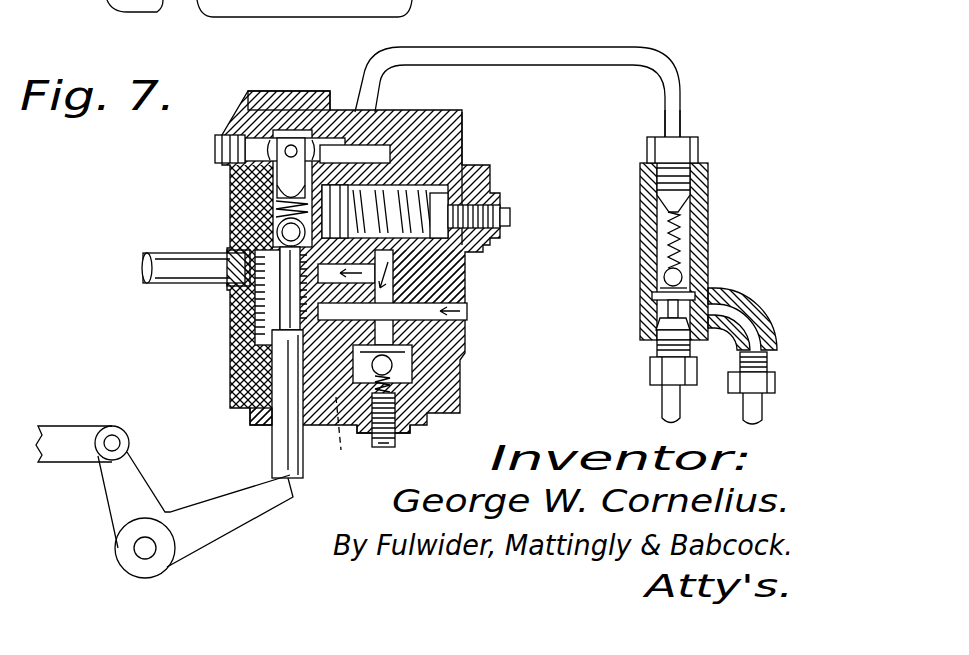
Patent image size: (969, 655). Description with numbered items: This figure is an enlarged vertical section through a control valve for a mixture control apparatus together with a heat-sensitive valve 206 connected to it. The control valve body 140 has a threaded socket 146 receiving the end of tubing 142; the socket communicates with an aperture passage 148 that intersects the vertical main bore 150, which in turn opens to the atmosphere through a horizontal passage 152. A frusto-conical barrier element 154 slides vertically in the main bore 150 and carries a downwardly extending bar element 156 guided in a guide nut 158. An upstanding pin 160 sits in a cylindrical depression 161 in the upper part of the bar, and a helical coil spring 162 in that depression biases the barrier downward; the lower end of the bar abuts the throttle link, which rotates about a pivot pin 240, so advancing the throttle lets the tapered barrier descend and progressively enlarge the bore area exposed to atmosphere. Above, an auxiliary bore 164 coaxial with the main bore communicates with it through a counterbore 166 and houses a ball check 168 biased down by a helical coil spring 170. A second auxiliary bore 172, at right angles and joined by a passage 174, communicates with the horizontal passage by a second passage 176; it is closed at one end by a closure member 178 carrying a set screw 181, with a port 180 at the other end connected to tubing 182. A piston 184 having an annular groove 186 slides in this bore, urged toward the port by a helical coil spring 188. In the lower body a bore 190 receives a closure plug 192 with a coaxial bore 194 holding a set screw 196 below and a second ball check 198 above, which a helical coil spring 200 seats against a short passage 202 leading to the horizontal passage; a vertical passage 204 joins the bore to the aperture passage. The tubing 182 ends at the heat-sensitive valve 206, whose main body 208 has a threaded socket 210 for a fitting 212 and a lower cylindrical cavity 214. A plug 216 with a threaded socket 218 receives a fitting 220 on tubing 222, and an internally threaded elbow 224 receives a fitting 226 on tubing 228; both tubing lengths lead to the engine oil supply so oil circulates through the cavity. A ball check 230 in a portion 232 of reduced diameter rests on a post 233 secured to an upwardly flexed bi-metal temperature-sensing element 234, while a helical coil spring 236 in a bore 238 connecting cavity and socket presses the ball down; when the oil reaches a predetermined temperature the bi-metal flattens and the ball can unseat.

The control valve body 140 is at (476, 118).
The tubing 142 is at (150, 263).
The threaded socket 146 is at (276, 233).
The aperture passage 148 is at (268, 302).
The main bore 150 is at (237, 388).
The horizontal passage 152 is at (470, 314).
The frusto-conical barrier element 154 is at (273, 335).
The bar element 156 is at (280, 455).
The guide nut 158 is at (250, 418).
The upstanding pin 160 is at (287, 345).
The cylindrical depression 161 is at (258, 312).
The helical coil spring / throttle link 162 is at (212, 532).
The auxiliary bore 164 is at (283, 188).
The counterbore 166 is at (240, 253).
The ball check 168 is at (273, 208).
The helical coil spring 170 is at (272, 180).
The second auxiliary bore 172 is at (392, 165).
The passage 174 is at (362, 160).
The second passage 176 is at (465, 293).
The closure member 178 is at (490, 172).
The port 180 is at (463, 128).
The set screw 181 is at (508, 222).
The tubing 182 is at (550, 56).
The piston 184 is at (450, 172).
The annular groove 186 is at (465, 270).
The helical coil spring 188 is at (508, 206).
The bore 190 is at (420, 370).
The closure plug 192 is at (418, 430).
The coaxial bore 194 is at (433, 422).
The set screw 196 is at (397, 447).
The second ball check 198 is at (440, 395).
The helical coil spring 200 is at (427, 410).
The short passage 202 is at (470, 337).
The vertical passage 204 is at (339, 437).
The heat-sensitive valve 206 is at (725, 175).
The main body 208 is at (710, 208).
The threaded socket 210 is at (667, 155).
The fitting 212 is at (692, 145).
The cylindrical cavity 214 is at (652, 302).
The plug 216 is at (640, 350).
The threaded socket 218 is at (655, 375).
The fitting 220 is at (660, 350).
The tubing 222 is at (668, 405).
The elbow 224 is at (750, 290).
The fitting 226 is at (780, 370).
The tubing 228 is at (745, 402).
The ball check 230 is at (665, 274).
The portion of reduced diameter 232 is at (665, 292).
The post 233 is at (710, 290).
The bi-metal temperature-sensing element 234 is at (648, 322).
The helical coil spring 236 is at (663, 202).
The bore 238 is at (663, 235).
The pivot pin 240 is at (135, 551).